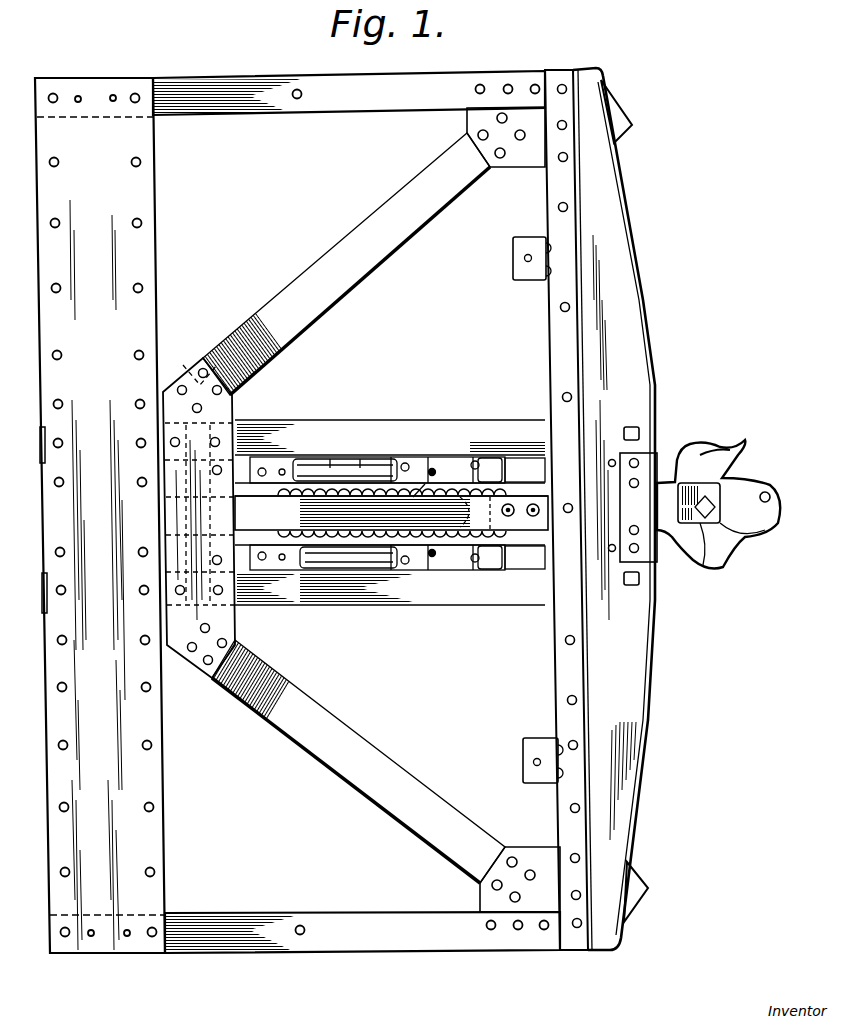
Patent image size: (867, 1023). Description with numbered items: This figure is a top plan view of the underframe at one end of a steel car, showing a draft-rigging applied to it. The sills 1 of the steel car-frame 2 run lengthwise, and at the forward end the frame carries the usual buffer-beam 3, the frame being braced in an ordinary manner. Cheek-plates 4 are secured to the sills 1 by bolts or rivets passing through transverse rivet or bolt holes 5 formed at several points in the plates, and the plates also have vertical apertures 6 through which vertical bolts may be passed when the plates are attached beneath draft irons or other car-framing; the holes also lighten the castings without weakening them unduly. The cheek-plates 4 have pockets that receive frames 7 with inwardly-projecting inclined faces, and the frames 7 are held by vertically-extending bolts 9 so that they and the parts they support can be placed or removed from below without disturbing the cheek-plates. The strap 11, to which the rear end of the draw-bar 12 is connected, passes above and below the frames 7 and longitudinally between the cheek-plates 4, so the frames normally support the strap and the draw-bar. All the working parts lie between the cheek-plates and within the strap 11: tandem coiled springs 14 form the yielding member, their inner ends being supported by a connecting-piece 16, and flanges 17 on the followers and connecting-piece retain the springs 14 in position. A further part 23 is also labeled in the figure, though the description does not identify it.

The sills 1 is at (346, 428).
The steel car-frame 2 is at (110, 515).
The buffer-beam 3 is at (695, 489).
The cheek-plates 4 is at (473, 456).
The transverse rivet or bolt holes 5 is at (428, 456).
The vertical apertures 6 is at (391, 456).
The frames 7 is at (433, 486).
The vertically-extending bolts 9 is at (431, 470).
The strap 11 is at (413, 498).
The draw-bar 12 is at (543, 536).
The springs 14 is at (305, 484).
The connecting-piece 16 is at (352, 547).
The flanges 17 is at (300, 500).
The upper stop block 23 is at (503, 485).